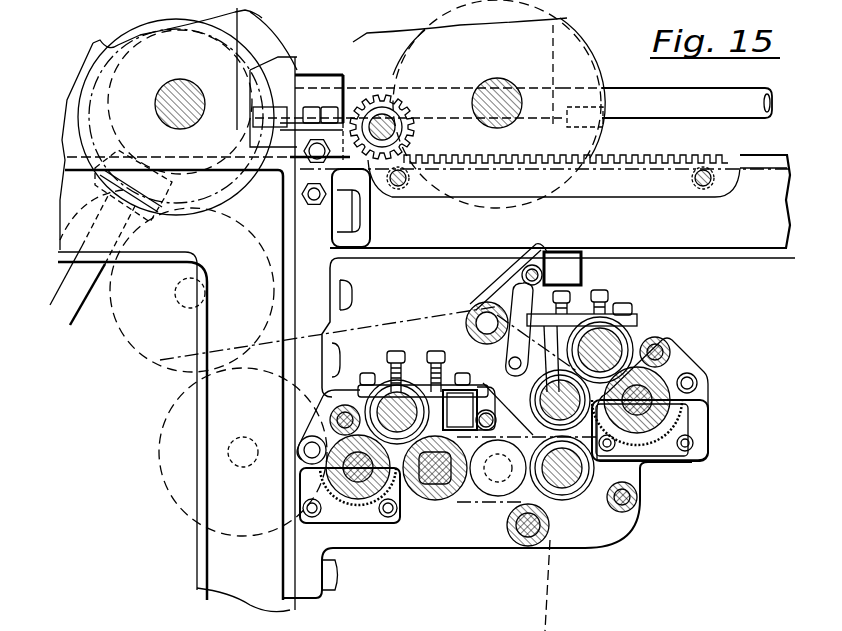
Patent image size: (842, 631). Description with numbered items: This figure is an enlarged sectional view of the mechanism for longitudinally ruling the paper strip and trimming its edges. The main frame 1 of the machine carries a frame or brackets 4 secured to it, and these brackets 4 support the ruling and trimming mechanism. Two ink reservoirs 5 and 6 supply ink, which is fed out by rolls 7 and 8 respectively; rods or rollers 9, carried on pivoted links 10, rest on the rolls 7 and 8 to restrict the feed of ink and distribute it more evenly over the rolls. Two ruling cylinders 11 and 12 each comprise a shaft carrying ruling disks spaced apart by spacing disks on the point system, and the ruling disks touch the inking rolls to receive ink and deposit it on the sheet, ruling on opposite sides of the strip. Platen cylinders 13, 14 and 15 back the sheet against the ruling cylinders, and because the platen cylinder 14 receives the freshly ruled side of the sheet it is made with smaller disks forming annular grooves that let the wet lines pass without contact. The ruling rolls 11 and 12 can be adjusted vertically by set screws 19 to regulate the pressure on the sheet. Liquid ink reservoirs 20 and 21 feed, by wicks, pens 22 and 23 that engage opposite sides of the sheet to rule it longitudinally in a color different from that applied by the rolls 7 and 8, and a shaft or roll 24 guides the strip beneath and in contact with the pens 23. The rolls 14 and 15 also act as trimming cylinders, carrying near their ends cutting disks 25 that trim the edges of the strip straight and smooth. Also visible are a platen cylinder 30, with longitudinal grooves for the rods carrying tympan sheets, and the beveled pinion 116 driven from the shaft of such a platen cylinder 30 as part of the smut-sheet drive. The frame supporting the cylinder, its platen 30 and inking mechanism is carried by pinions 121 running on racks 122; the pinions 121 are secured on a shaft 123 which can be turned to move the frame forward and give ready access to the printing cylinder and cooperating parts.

The main frame 1 is at (174, 432).
The frame or brackets 4 is at (464, 492).
The ink reservoir 5 is at (350, 510).
The ink reservoir 6 is at (677, 456).
The ink feed roll 7 is at (330, 471).
The ink feed roll 8 is at (660, 413).
The rods or rollers 9 is at (505, 380).
The pivoted links 10 is at (330, 440).
The ruling cylinder 11 is at (423, 374).
The ruling cylinder 12 is at (640, 330).
The platen cylinder 13 is at (434, 498).
The platen cylinder 14 is at (532, 339).
The platen cylinder 15 is at (567, 490).
The set screws 19 is at (606, 285).
The liquid ink reservoir 20 is at (460, 410).
The liquid ink reservoir 21 is at (567, 257).
The pen 22 is at (483, 385).
The pen 23 is at (518, 276).
The guide shaft or roll 24 is at (475, 310).
The cutting disks 25 is at (603, 473).
The platen cylinder 30 is at (238, 183).
The beveled pinion 116 is at (163, 210).
The pinions 121 is at (383, 96).
The racks 122 is at (650, 162).
The shaft 123 is at (395, 120).